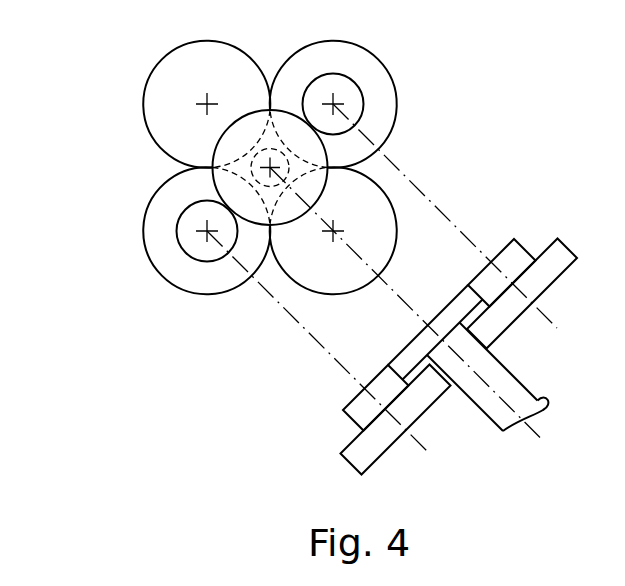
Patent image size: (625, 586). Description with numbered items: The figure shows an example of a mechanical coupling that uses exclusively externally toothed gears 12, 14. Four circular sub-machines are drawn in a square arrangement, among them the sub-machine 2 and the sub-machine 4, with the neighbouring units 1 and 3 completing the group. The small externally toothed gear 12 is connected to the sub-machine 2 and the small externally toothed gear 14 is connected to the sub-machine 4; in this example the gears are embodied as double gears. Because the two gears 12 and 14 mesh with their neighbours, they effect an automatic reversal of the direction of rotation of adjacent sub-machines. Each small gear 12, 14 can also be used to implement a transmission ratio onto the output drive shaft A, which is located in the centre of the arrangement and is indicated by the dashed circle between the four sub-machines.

The roller 1 is at (398, 218).
The sub-machine 2 is at (398, 92).
The roller 3 is at (143, 102).
The sub-machine 4 is at (158, 278).
The externally toothed gear 12 is at (355, 80).
The externally toothed gear 14 is at (179, 220).
The output drive shaft A is at (288, 165).